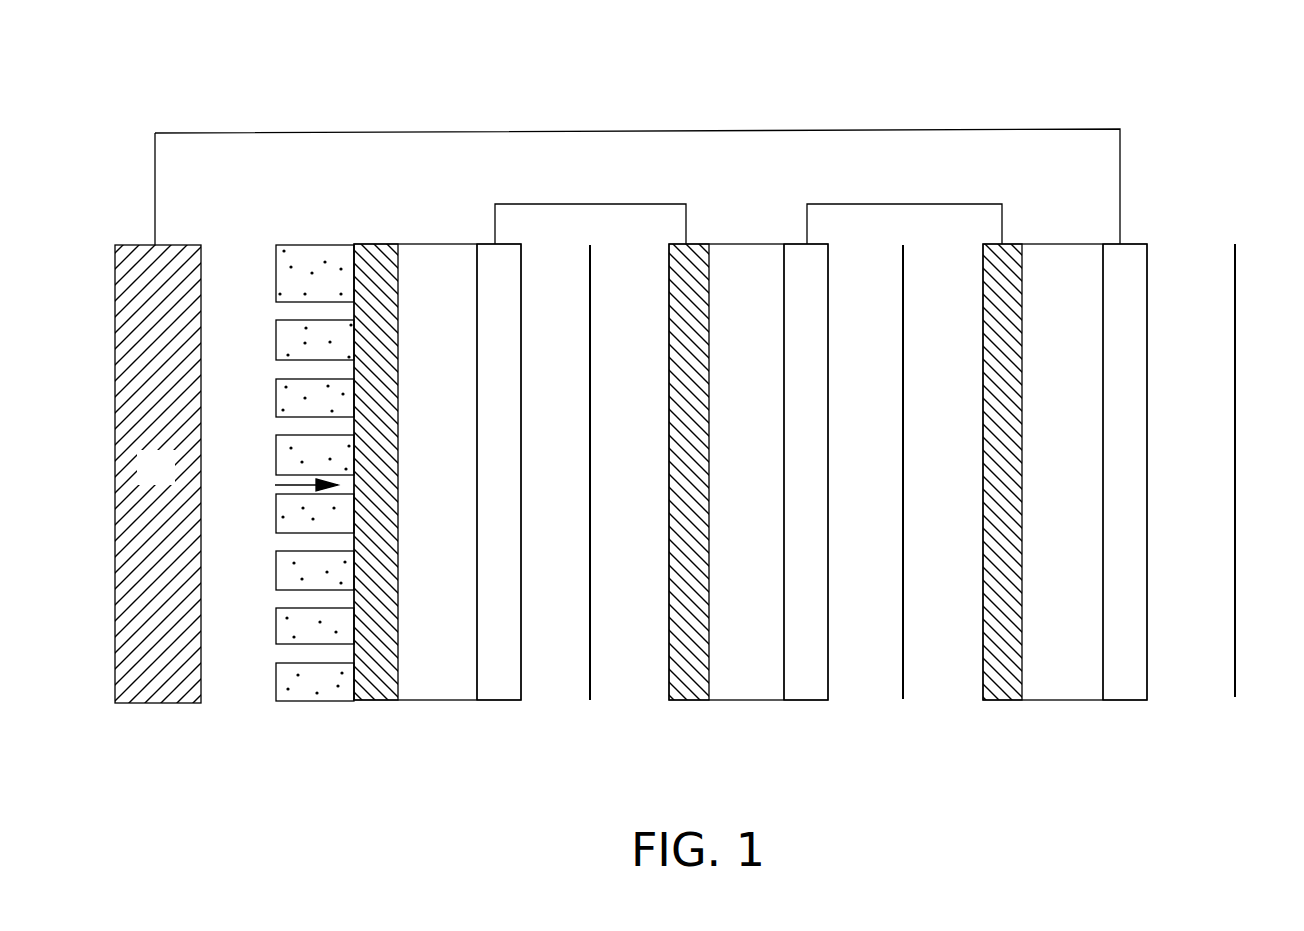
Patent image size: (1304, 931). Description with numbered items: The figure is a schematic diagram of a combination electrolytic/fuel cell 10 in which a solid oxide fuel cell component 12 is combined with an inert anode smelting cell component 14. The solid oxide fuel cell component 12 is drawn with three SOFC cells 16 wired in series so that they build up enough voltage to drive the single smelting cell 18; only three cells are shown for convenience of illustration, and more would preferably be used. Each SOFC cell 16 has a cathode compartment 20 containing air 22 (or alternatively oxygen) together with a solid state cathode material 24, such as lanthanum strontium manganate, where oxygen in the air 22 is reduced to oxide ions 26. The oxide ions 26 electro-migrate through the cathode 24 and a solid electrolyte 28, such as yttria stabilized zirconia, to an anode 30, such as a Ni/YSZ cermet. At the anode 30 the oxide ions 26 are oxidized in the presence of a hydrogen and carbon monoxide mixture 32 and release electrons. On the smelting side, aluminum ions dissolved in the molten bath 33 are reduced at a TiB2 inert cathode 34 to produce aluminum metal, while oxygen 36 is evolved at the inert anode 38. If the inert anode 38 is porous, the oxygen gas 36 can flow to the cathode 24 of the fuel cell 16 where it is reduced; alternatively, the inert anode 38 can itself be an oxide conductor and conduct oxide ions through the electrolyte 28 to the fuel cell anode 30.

The combination electrolytic/fuel cell 10 is at (655, 75).
The solid oxide fuel cell component 12 is at (888, 145).
The inert anode smelting cell component 14 is at (292, 148).
The SOFC cell 16 is at (437, 213).
The smelting cell 18 is at (233, 240).
The cathode compartment 20 is at (630, 694).
The air 22 is at (612, 499).
The solid state cathode material 24 is at (377, 701).
The oxide ions 26 is at (532, 327).
The solid electrolyte 28 is at (419, 480).
The anode 30 is at (505, 701).
The hydrogen and carbon monoxide mixture 32 is at (551, 694).
The molten bath 33 is at (233, 691).
The inert cathode 34 is at (139, 481).
The oxygen 36 is at (287, 487).
The inert anode 38 is at (320, 715).